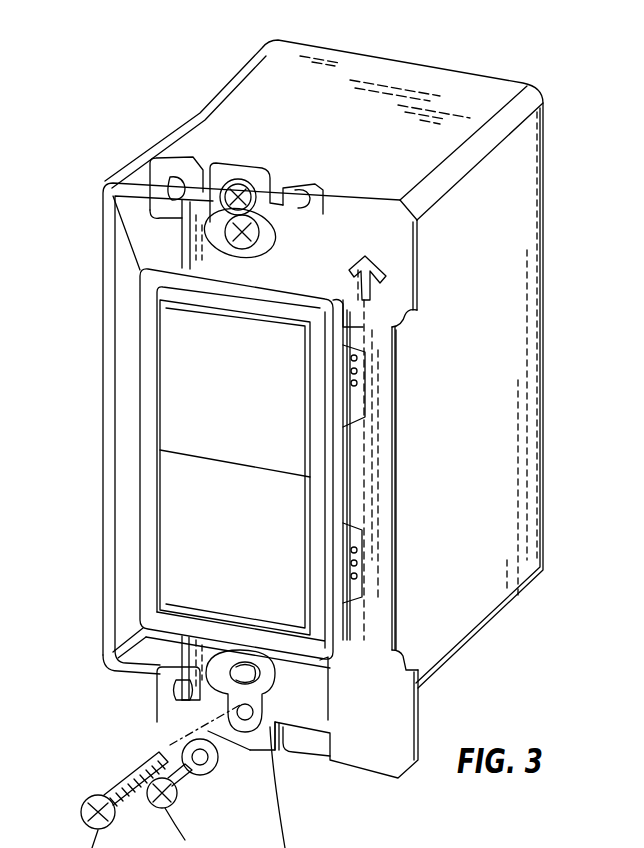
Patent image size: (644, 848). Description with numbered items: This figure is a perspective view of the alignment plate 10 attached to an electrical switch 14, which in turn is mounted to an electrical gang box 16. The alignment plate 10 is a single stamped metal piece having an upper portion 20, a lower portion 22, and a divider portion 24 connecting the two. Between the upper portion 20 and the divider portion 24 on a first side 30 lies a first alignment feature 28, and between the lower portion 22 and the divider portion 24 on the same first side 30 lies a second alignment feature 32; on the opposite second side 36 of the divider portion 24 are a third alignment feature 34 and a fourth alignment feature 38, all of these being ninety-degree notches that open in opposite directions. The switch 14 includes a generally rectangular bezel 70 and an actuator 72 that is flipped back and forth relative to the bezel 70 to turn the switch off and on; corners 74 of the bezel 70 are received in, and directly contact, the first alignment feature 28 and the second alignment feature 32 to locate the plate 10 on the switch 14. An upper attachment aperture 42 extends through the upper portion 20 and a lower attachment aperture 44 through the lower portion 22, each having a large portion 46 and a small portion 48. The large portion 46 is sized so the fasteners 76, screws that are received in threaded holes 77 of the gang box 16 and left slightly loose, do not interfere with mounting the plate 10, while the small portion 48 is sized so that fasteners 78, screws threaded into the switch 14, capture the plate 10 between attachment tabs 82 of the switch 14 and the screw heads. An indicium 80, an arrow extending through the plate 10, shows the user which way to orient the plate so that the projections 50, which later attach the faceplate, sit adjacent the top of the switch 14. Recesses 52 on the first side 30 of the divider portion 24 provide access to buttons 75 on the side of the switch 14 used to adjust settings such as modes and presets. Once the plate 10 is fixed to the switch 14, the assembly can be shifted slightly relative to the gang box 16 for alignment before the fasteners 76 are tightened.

The alignment plate 10 is at (297, 455).
The electrical switch 14 is at (179, 432).
The electrical gang box 16 is at (525, 165).
The upper portion 20 is at (376, 208).
The lower portion 22 is at (403, 713).
The divider portion 24 is at (372, 493).
The first alignment feature 28 is at (347, 327).
The first side 30 is at (325, 465).
The second alignment feature 32 is at (323, 657).
The third alignment feature 34 is at (412, 324).
The second side 36 is at (393, 510).
The fourth alignment feature 38 is at (405, 660).
The upper attachment aperture 42 is at (233, 250).
The lower attachment aperture 44 is at (245, 662).
The large portion 46 is at (276, 238).
The small portion 48 is at (225, 205).
The projections 50 is at (188, 190).
The recesses 52 is at (362, 382).
The bezel 70 is at (150, 492).
The actuator 72 is at (172, 335).
The corners 74 is at (140, 268).
The buttons 75 is at (357, 352).
The fasteners 76 is at (140, 200).
The threaded holes 77 is at (262, 690).
The fasteners 78 is at (252, 180).
The indicium 80 is at (363, 268).
The attachment tabs 82 is at (163, 180).